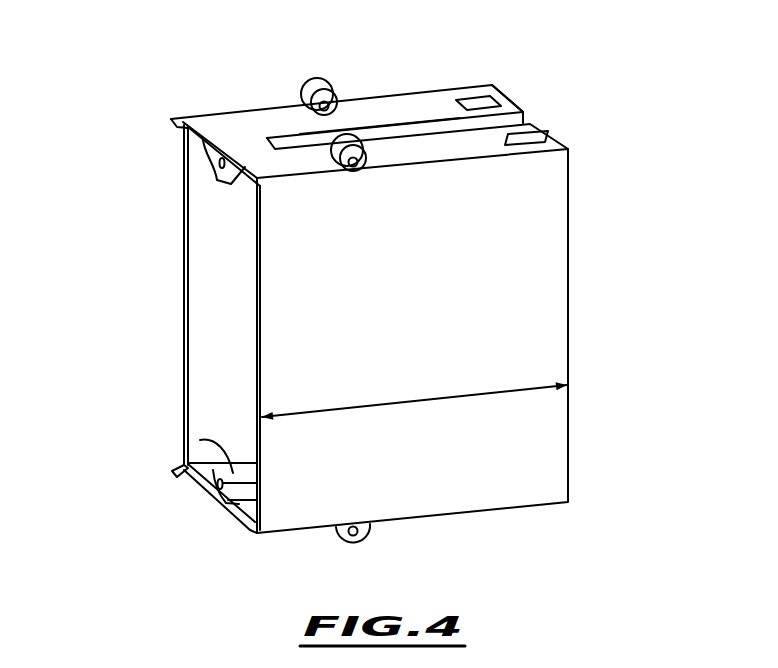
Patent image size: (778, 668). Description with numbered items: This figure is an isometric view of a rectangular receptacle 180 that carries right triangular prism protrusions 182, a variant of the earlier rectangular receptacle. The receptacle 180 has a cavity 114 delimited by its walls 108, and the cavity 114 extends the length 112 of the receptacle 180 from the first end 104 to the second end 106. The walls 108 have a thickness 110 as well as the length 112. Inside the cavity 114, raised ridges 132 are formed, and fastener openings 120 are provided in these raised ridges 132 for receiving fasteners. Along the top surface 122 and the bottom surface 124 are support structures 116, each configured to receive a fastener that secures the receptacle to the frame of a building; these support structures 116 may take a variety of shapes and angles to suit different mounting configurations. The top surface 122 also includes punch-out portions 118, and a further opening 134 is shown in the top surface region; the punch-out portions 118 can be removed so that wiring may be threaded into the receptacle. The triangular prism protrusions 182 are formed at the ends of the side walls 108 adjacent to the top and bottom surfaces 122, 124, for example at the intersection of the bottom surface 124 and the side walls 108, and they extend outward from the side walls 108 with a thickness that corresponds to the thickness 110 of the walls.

The first end 104 is at (133, 289).
The second end 106 is at (585, 272).
The walls 108 is at (227, 120).
The thickness 110 is at (223, 238).
The length 112 is at (420, 410).
The cavity 114 is at (222, 369).
The support structures 116 is at (310, 83).
The punch-out portions 118 is at (533, 137).
The fastener openings 120 is at (221, 489).
The top surface 122 is at (411, 112).
The bottom surface 124 is at (522, 508).
The raised ridges 132 is at (200, 440).
The opening 134 is at (536, 114).
The rectangular receptacle 180 is at (461, 60).
The triangular prism protrusions 182 is at (180, 118).